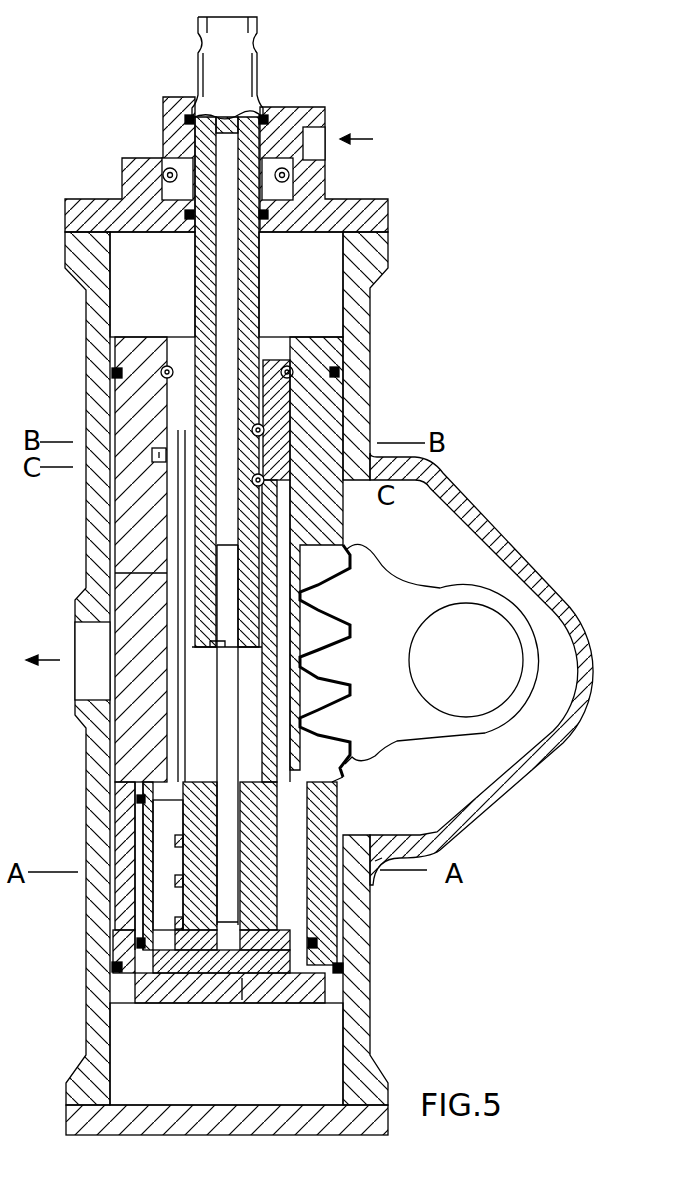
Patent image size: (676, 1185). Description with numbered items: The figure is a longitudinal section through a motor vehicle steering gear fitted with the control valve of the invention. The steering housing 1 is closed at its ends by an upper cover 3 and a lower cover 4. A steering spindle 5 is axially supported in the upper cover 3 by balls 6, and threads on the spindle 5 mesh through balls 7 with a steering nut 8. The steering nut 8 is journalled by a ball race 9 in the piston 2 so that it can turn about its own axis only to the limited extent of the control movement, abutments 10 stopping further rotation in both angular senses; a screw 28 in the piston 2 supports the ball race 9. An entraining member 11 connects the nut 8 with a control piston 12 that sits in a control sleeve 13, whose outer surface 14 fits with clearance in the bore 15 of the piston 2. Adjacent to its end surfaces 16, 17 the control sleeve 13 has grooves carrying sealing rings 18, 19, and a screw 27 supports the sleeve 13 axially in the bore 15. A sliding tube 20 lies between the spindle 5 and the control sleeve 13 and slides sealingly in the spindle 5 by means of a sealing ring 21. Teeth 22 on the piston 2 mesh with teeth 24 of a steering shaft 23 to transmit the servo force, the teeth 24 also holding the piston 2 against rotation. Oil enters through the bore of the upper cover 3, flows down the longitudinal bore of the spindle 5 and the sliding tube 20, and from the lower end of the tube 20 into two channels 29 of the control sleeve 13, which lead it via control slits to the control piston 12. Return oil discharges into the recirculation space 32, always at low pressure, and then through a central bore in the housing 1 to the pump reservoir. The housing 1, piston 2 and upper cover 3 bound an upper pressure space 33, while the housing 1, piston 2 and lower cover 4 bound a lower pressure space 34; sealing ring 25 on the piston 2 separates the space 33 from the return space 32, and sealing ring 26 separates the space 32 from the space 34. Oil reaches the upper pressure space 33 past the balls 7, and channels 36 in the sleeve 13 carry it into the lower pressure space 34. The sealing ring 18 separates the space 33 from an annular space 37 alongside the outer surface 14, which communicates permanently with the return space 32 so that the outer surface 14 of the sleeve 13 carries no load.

The steering housing 1 is at (95, 388).
The piston 2 is at (133, 532).
The upper cover 3 is at (75, 212).
The lower cover 4 is at (77, 1123).
The steering spindle 5 is at (204, 301).
The balls 6 is at (164, 172).
The balls 7 is at (264, 431).
The steering nut 8 is at (275, 402).
The ball race 9 is at (170, 366).
The abutments 10 is at (123, 470).
The entraining member 11 is at (178, 574).
The control piston 12 is at (187, 792).
The control sleeve 13 is at (143, 905).
The outer surface 14 is at (137, 818).
The bore 15 is at (340, 915).
The end surface 16 is at (357, 789).
The end surface 17 is at (242, 978).
The sealing ring 18 is at (133, 801).
The sealing ring 19 is at (117, 965).
The sliding tube 20 is at (215, 730).
The sealing ring 21 is at (205, 640).
The teeth 22 is at (330, 552).
The steering shaft 23 is at (493, 677).
The teeth 24 is at (372, 760).
The sealing ring 25 is at (340, 373).
The sealing ring 26 is at (338, 972).
The screw 27 is at (183, 990).
The screw 28 is at (289, 365).
The channels 29 is at (163, 913).
The recirculation space 32 is at (510, 582).
The upper pressure space 33 is at (130, 293).
The lower pressure space 34 is at (127, 1045).
The channels 36 is at (320, 950).
The annular space 37 is at (404, 885).